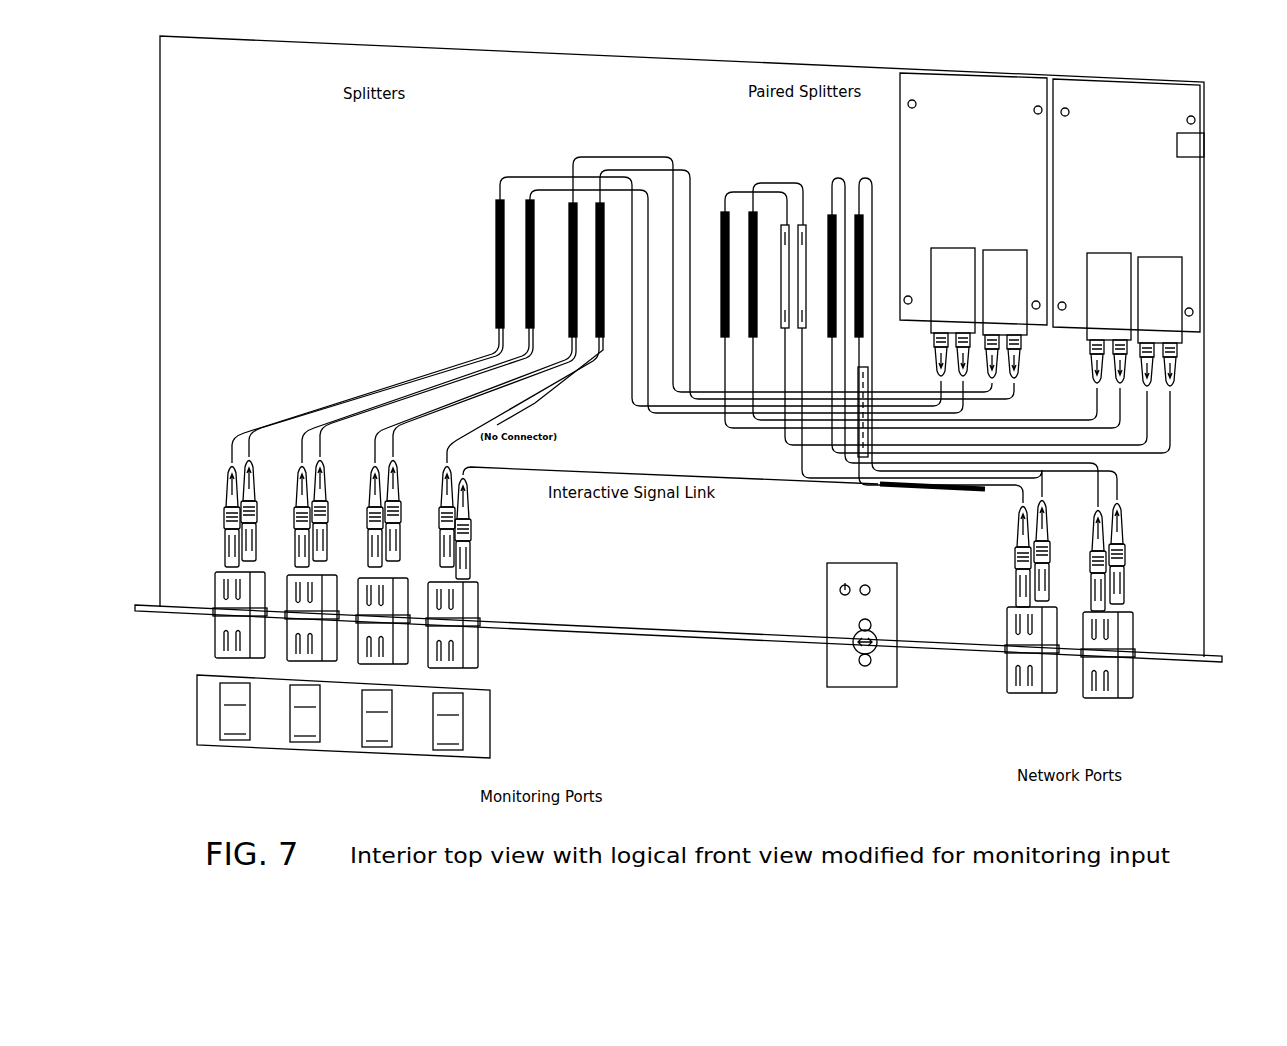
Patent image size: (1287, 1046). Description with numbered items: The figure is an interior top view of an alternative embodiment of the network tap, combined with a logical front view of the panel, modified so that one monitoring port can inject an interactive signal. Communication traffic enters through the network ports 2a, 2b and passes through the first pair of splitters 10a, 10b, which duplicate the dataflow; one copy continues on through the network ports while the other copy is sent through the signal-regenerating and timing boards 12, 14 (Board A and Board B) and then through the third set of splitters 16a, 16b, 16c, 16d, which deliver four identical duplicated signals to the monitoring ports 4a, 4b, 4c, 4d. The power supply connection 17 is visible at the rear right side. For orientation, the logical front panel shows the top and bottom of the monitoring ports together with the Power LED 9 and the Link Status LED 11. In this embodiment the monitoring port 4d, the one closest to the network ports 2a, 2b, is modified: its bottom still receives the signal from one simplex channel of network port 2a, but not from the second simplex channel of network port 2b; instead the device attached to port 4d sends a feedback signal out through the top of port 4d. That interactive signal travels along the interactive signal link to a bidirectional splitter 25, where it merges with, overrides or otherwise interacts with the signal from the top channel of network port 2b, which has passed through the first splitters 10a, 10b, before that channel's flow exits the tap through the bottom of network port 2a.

The network port 2a is at (1030, 705).
The network port 2b is at (1107, 710).
The monitoring port 4a is at (233, 752).
The monitoring port 4b is at (305, 755).
The monitoring port 4c is at (378, 758).
The modified monitoring port 4d is at (450, 762).
The Power LED 9 is at (865, 575).
The splitter 10a is at (883, 178).
The splitter 10b is at (797, 170).
The Link Status LED 11 is at (865, 690).
The signal-regenerating and timing board 12 is at (973, 225).
The signal-regenerating and timing board 14 is at (1126, 232).
The splitter 16a is at (497, 183).
The splitter 16b is at (517, 166).
The splitter 16c is at (575, 152).
The splitter 16d is at (626, 150).
The power supply connection 17 is at (1210, 147).
The bidirectional splitter 25 is at (940, 500).